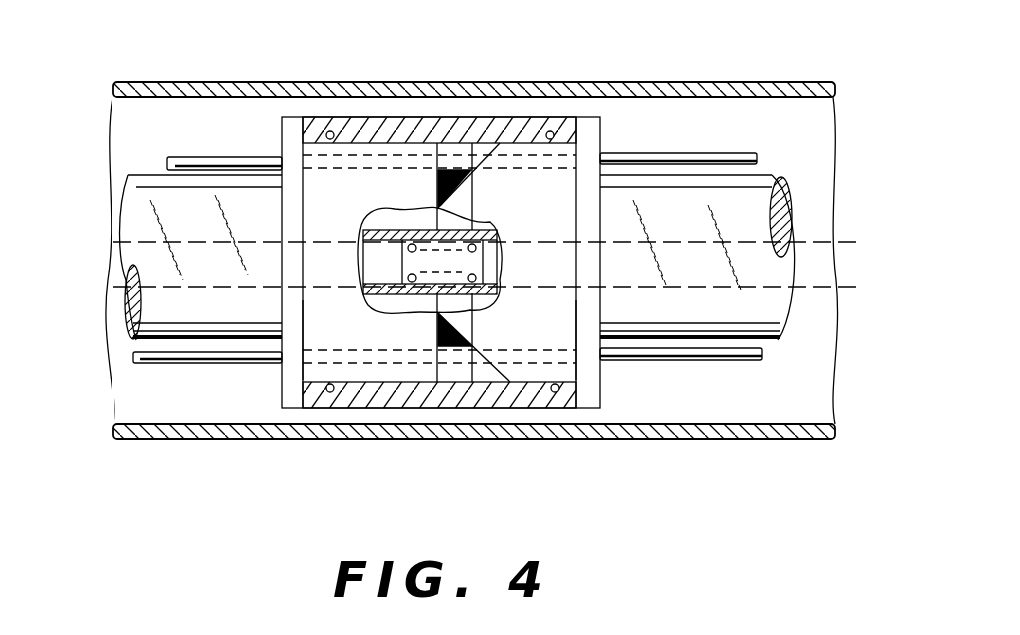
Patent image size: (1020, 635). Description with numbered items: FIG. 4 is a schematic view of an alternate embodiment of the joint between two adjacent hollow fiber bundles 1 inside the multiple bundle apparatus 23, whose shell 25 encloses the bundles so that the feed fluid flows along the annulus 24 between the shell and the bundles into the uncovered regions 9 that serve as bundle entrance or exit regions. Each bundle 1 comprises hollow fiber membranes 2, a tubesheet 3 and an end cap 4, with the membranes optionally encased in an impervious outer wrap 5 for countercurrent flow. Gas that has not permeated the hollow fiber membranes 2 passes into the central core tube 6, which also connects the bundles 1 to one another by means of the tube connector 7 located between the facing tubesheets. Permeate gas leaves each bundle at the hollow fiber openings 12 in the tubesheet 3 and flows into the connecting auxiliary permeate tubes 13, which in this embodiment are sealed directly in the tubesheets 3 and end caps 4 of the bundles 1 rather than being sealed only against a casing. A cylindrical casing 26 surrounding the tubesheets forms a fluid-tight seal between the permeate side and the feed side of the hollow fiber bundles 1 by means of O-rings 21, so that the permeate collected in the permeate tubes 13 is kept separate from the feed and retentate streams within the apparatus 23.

The hollow fiber bundle 1 is at (130, 305).
The hollow fiber membranes 2 is at (150, 210).
The tubesheet 3 is at (462, 269).
The end cap 4 is at (365, 330).
The outer wrap 5 is at (720, 345).
The central core tube 6 is at (779, 180).
The tube connector 7 is at (470, 143).
The uncovered region 9 is at (614, 355).
The hollow fiber openings 12 is at (474, 384).
The connecting auxiliary permeate tubes 13 is at (225, 157).
The O-rings 21 is at (330, 393).
The multiple bundle apparatus 23 is at (472, 254).
The annulus 24 is at (162, 118).
The shell 25 is at (226, 436).
The cylindrical casing 26 is at (428, 125).